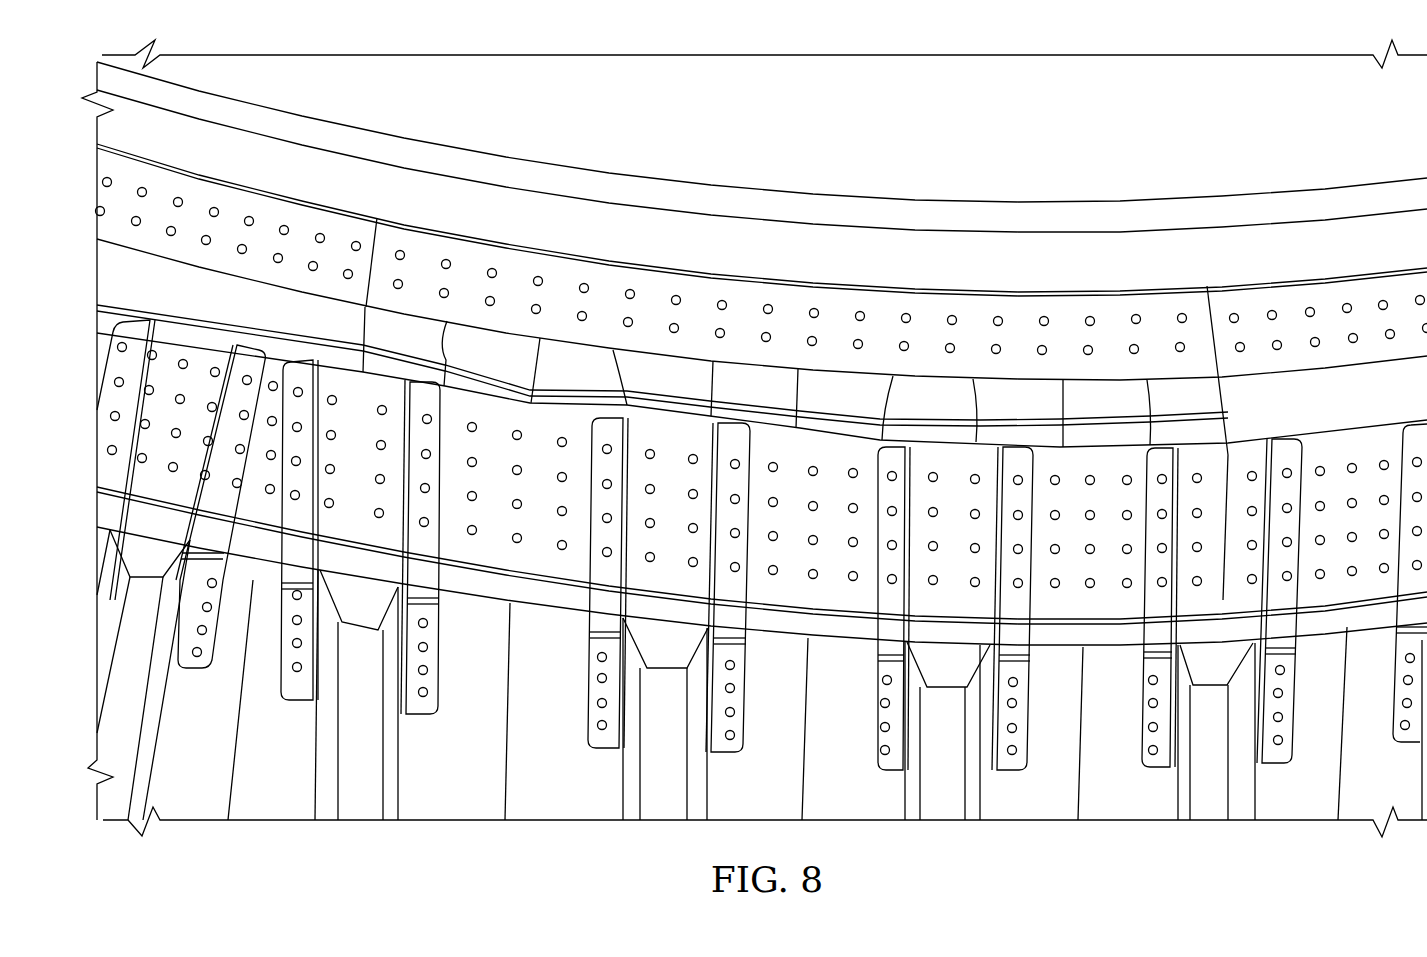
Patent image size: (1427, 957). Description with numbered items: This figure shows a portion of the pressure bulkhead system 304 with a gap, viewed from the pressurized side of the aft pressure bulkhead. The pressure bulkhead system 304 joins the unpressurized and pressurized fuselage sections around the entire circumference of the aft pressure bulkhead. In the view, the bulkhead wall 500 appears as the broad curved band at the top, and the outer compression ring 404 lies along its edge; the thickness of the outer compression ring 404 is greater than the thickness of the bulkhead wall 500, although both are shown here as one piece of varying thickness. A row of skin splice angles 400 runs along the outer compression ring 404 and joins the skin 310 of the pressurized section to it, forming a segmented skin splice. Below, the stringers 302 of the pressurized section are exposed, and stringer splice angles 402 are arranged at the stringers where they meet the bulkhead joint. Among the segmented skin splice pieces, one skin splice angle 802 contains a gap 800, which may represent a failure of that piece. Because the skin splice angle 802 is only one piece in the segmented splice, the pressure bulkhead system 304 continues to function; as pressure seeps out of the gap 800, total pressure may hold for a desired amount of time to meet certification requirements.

The stringers 302 is at (402, 766).
The pressure bulkhead system 304 is at (1006, 124).
The skin 310 is at (550, 598).
The skin splice angles 400 is at (431, 258).
The stringer splice angles 402 is at (228, 395).
The outer compression ring 404 is at (1072, 252).
The bulkhead wall 500 is at (858, 123).
The gap 800 is at (1120, 389).
The skin splice angle 802 is at (833, 590).